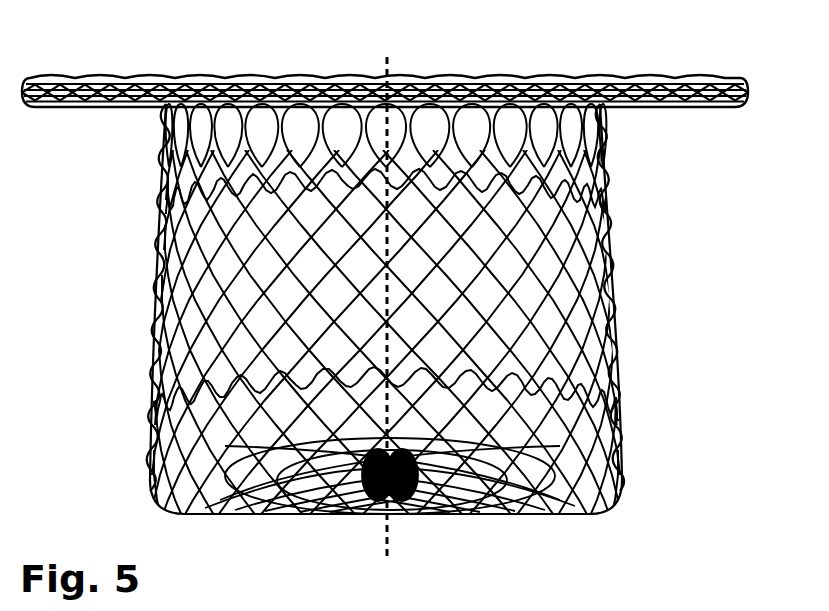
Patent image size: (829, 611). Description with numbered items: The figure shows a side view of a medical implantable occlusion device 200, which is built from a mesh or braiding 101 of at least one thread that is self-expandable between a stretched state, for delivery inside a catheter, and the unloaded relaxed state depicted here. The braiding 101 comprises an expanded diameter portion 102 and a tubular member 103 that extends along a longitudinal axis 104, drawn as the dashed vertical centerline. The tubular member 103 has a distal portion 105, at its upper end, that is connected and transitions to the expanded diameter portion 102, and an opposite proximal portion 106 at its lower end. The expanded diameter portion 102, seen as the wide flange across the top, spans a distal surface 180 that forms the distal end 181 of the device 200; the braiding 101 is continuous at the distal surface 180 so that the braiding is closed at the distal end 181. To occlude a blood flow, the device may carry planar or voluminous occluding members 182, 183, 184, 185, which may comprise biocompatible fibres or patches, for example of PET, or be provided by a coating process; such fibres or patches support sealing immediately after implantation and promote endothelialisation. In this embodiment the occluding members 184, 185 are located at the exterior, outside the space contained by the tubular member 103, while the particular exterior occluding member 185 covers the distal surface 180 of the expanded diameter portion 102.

The medical implantable occlusion device 200 is at (90, 62).
The braiding 101 is at (607, 357).
The expanded diameter portion 102 is at (700, 106).
The tubular member 103 is at (578, 287).
The longitudinal axis 104 is at (392, 540).
The distal portion 105 is at (618, 134).
The proximal portion 106 is at (634, 489).
The distal surface 180 is at (405, 82).
The distal end 181 is at (244, 75).
The occluding member 182 is at (167, 247).
The occluding member 183 is at (151, 464).
The occluding member 184 is at (606, 243).
The exterior occluding member 185 is at (668, 78).